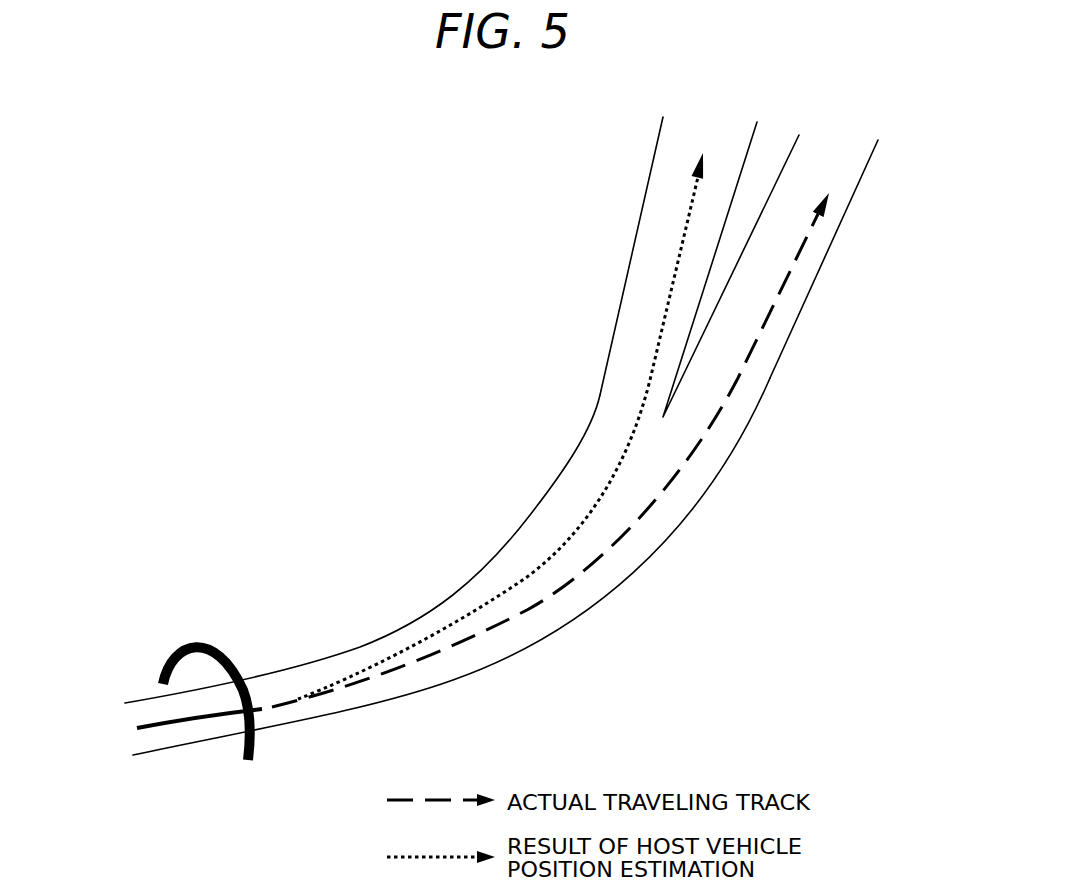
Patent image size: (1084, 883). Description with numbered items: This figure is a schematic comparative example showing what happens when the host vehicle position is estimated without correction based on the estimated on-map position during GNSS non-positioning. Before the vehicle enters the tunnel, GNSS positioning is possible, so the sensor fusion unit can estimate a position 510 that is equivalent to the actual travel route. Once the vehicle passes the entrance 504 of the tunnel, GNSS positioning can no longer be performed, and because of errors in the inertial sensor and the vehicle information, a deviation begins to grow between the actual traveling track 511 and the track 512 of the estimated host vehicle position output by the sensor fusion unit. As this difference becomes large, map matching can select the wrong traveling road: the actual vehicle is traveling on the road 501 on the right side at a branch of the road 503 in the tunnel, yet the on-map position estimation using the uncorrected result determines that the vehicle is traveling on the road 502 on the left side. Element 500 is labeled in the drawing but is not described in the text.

The road 500 is at (511, 538).
The road on the right side 501 is at (394, 630).
The road on the left side 502 is at (647, 182).
The road 503 is at (830, 260).
The entrance of the tunnel 504 is at (162, 651).
The position equivalent to an actual travel route 510 is at (190, 726).
The actual traveling track 511 is at (776, 311).
The track of an estimated host vehicle position 512 is at (683, 238).